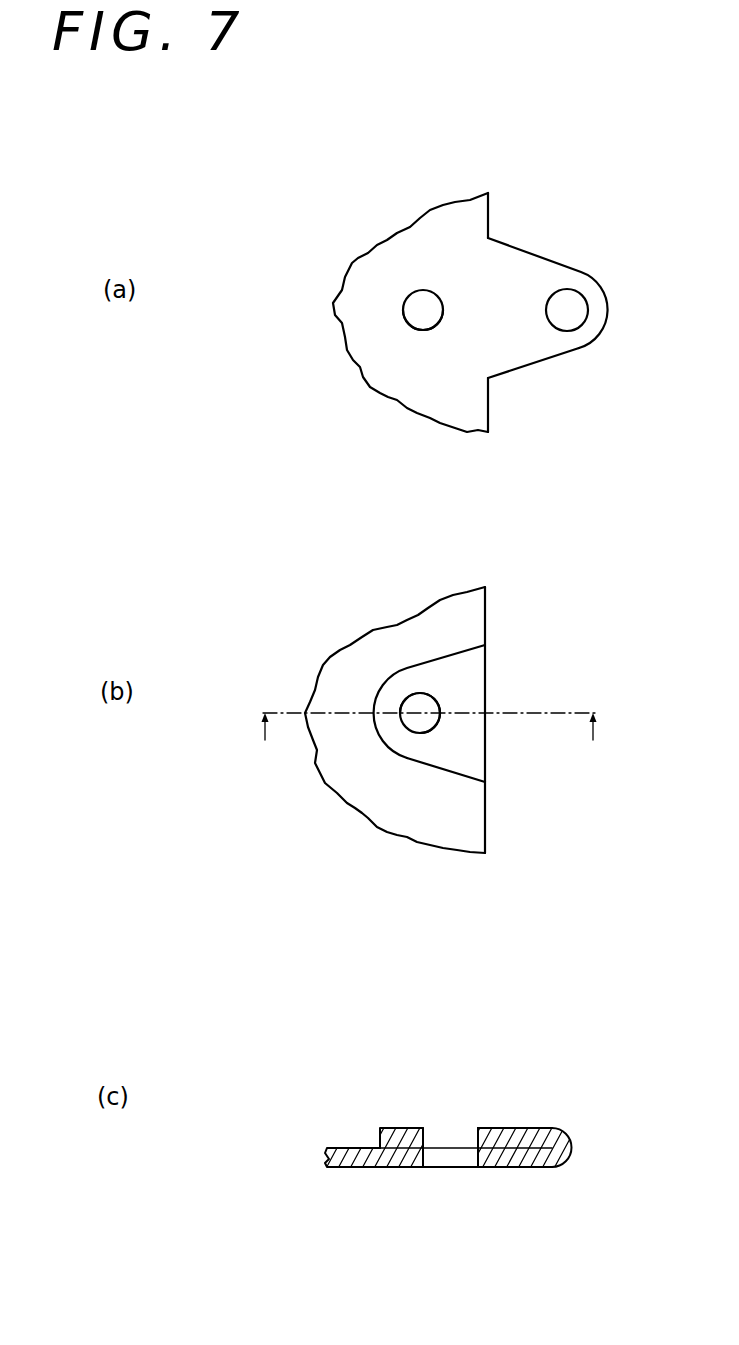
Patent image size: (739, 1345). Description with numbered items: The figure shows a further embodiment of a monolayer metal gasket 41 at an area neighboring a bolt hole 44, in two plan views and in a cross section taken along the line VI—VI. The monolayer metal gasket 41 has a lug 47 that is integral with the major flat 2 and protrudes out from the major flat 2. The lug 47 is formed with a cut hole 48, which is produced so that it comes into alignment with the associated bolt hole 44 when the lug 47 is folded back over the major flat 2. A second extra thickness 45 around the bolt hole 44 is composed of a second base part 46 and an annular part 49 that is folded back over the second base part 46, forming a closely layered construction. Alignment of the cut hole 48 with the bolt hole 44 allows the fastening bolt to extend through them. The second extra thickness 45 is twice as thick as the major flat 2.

The major flat 2 is at (450, 233).
The monolayer metal gasket 41 is at (456, 694).
The bolt hole 44 is at (415, 310).
The second extra thickness 45 is at (397, 760).
The second base part 46 is at (417, 335).
The lug 47 is at (509, 702).
The cut hole 48 is at (570, 303).
The annular part 49 is at (582, 332).